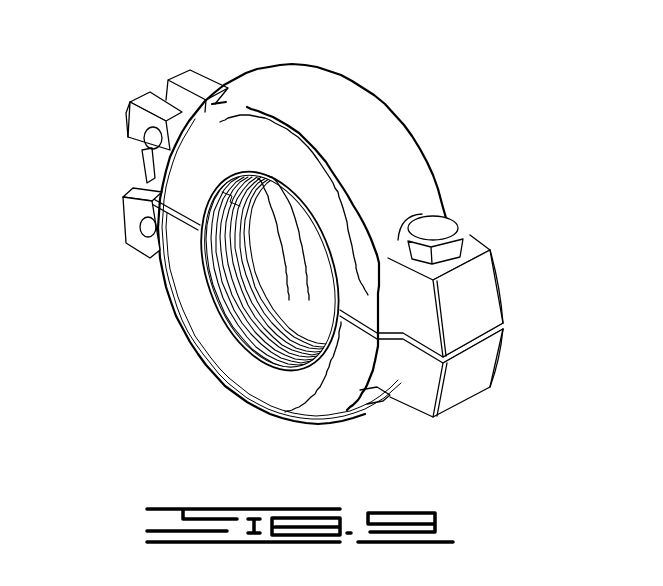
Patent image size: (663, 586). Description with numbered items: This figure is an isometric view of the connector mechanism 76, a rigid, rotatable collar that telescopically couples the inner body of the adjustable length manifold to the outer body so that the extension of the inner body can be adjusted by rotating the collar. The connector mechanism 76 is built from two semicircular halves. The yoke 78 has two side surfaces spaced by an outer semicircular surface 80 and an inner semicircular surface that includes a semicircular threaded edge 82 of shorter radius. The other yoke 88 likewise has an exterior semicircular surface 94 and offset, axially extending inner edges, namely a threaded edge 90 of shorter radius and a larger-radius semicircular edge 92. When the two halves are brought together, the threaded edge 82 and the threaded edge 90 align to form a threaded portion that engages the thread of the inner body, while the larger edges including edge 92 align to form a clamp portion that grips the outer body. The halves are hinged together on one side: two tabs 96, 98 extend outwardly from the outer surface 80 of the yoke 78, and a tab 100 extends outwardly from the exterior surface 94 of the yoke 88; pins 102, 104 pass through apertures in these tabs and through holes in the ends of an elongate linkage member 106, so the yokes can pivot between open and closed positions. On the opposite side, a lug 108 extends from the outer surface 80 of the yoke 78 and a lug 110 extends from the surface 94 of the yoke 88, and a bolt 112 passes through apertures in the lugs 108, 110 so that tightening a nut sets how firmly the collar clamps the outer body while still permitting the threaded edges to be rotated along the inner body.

The connector mechanism 76 is at (342, 229).
The semicircular yoke 78 is at (457, 140).
The outer semicircular surface 80 is at (350, 97).
The semicircular threaded edge 82 is at (232, 200).
The yoke 88 is at (224, 263).
The threaded edge 90 is at (250, 317).
The semicircular edge 92 is at (297, 300).
The exterior semicircular surface 94 is at (383, 397).
The tab 96 is at (126, 95).
The tab 98 is at (197, 75).
The tab 100 is at (105, 224).
The pin 102 is at (148, 135).
The pin 104 is at (143, 227).
The linkage member 106 is at (148, 178).
The lug 108 is at (482, 290).
The lug 110 is at (486, 366).
The bolt 112 is at (440, 228).